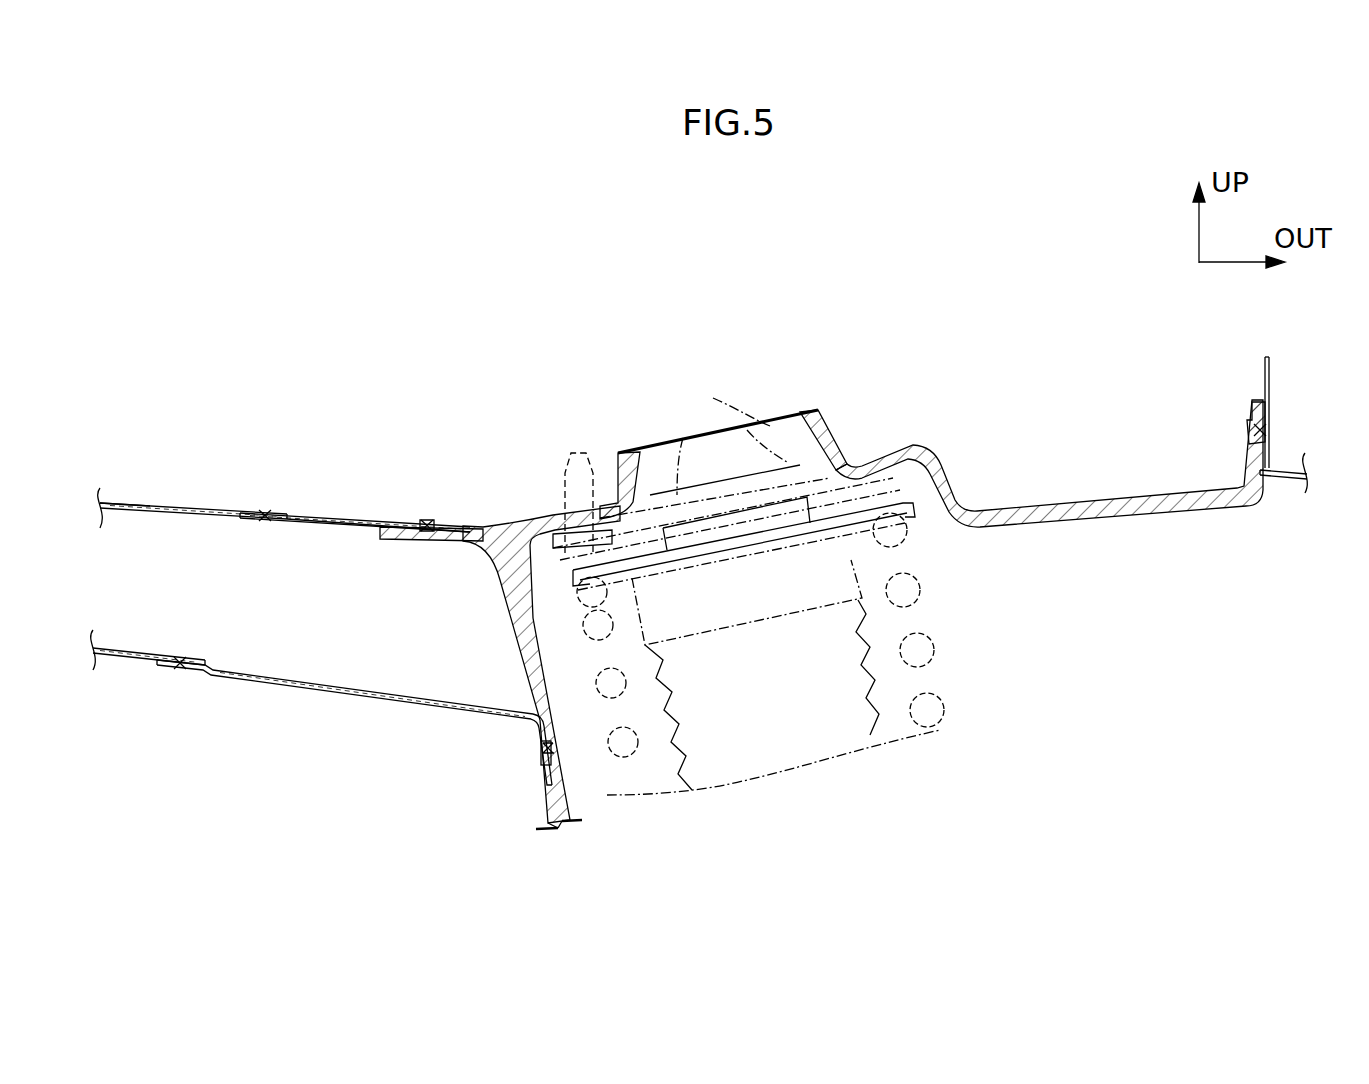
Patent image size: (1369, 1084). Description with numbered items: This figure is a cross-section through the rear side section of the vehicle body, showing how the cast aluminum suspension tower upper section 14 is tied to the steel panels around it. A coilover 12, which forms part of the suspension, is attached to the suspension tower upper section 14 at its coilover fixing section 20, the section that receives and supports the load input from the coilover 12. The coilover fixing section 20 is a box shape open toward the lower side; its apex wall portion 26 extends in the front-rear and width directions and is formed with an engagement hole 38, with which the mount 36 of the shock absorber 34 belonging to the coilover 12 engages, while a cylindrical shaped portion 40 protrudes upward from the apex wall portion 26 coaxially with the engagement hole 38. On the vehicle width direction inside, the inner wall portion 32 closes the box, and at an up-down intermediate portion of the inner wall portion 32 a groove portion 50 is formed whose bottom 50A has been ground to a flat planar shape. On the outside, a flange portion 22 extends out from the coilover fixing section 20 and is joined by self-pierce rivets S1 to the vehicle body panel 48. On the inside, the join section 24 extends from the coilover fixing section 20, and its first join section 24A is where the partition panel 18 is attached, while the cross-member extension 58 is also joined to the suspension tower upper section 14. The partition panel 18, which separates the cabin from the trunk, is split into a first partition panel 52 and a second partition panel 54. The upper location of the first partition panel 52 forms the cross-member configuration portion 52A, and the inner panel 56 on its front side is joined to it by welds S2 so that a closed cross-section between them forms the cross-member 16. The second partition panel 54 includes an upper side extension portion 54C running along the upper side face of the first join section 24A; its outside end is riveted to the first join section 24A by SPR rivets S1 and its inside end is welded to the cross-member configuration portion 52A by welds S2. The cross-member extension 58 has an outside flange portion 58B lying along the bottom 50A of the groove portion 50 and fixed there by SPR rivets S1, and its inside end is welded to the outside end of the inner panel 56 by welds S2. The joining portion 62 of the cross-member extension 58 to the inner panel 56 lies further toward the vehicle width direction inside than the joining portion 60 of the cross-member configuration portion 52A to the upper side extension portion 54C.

The coilover 12 is at (962, 655).
The suspension tower upper section 14 is at (952, 417).
The cross-member 16 is at (197, 450).
The partition panel 18 is at (277, 410).
The coilover fixing section 20 is at (663, 616).
The flange portion 22 is at (1250, 410).
The join section 24 is at (541, 601).
The first join section 24A is at (481, 523).
The apex wall portion 26 is at (870, 450).
The inner wall portion 32 is at (542, 818).
The shock absorber 34 is at (866, 560).
The mount 36 is at (713, 398).
The engagement hole 38 is at (783, 437).
The cylindrical shaped portion 40 is at (817, 450).
The vehicle body panel 48 is at (1266, 371).
The groove portion 50 is at (446, 747).
The bottom 50A is at (540, 734).
The first partition panel 52 is at (209, 498).
The cross-member configuration portion 52A is at (150, 504).
The second partition panel 54 is at (360, 508).
The upper side extension portion 54C is at (323, 514).
The inner panel 56 is at (137, 660).
The cross-member extension 58 is at (291, 690).
The outside flange portion 58B is at (543, 777).
The joining portion 60 is at (286, 501).
The joining portion 62 is at (202, 646).
The SPR rivets S1 is at (427, 518).
The welds S2 is at (266, 522).